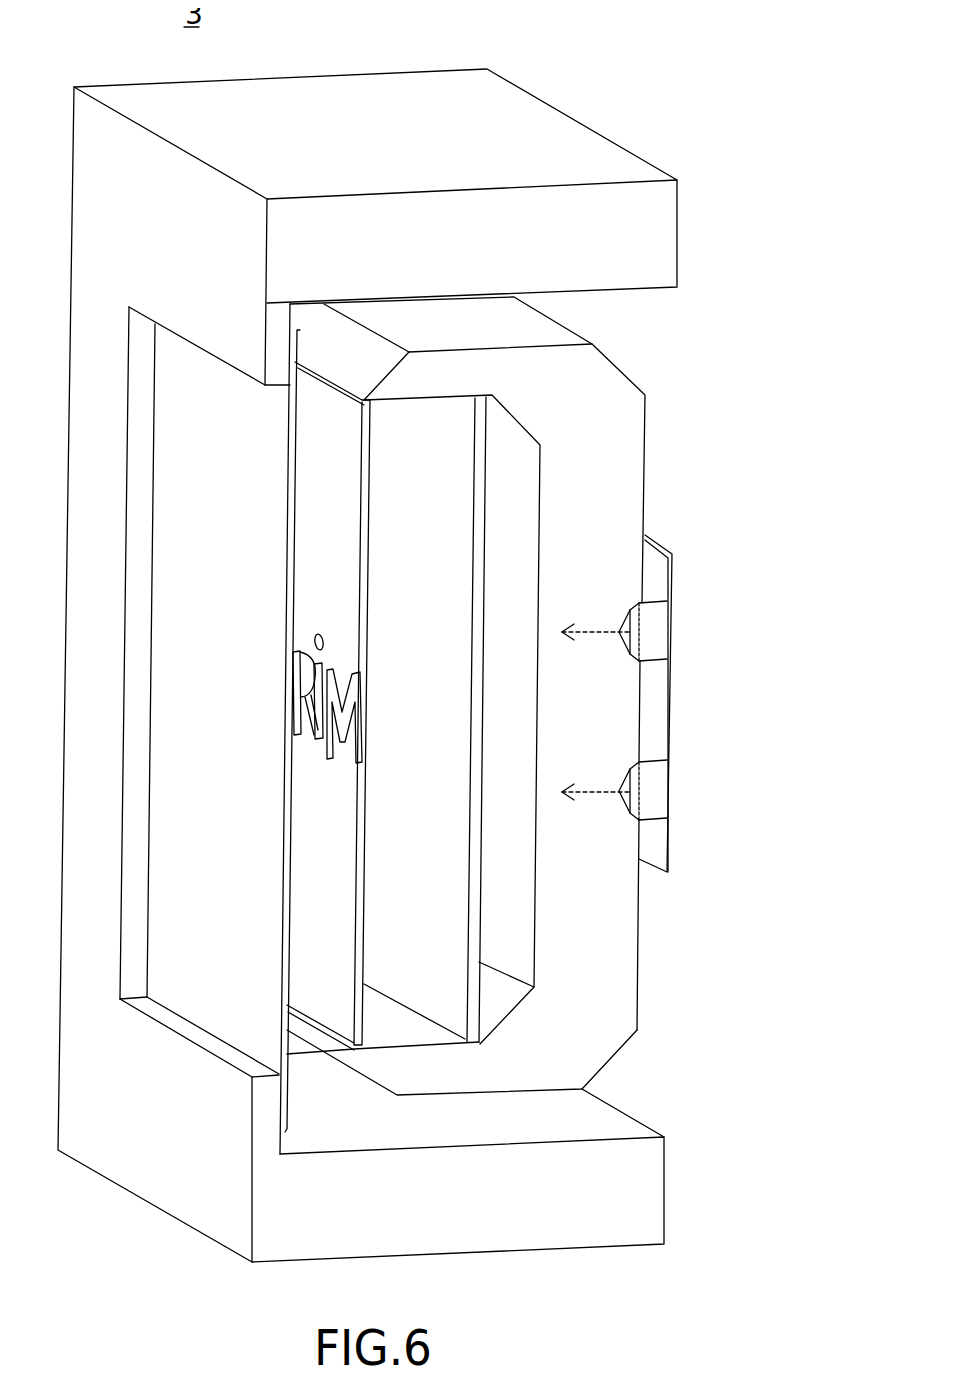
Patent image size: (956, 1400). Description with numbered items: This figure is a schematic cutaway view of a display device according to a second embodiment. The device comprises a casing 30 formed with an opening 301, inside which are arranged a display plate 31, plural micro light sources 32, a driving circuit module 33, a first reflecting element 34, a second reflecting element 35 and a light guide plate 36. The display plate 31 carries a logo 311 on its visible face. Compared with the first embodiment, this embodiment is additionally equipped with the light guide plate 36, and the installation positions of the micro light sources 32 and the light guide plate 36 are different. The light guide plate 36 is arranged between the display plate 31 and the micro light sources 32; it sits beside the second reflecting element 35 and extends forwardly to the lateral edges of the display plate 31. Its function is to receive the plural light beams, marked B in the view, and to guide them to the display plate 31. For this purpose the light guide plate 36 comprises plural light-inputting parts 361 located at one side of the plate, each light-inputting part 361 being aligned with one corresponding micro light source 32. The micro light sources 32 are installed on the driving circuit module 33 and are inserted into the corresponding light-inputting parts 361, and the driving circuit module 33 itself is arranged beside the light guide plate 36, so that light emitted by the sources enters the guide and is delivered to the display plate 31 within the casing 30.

The casing 30 is at (575, 142).
The opening 301 is at (135, 970).
The display plate 31 is at (362, 857).
The logo 311 is at (310, 738).
The micro light sources 32 is at (657, 635).
The driving circuit module 33 is at (652, 553).
The first reflecting element 34 is at (190, 628).
The second reflecting element 35 is at (475, 915).
The light guide plate 36 is at (618, 460).
The light-inputting parts 361 is at (630, 822).